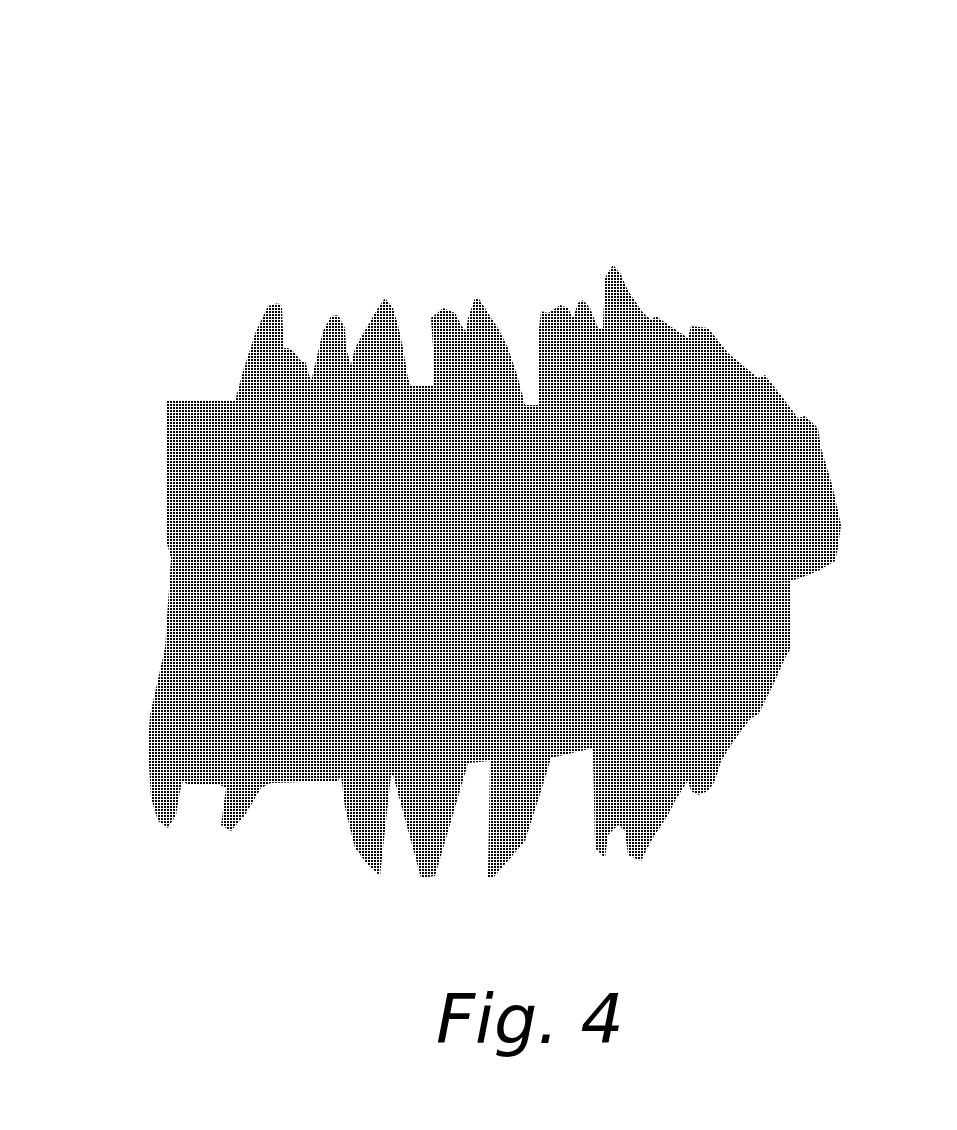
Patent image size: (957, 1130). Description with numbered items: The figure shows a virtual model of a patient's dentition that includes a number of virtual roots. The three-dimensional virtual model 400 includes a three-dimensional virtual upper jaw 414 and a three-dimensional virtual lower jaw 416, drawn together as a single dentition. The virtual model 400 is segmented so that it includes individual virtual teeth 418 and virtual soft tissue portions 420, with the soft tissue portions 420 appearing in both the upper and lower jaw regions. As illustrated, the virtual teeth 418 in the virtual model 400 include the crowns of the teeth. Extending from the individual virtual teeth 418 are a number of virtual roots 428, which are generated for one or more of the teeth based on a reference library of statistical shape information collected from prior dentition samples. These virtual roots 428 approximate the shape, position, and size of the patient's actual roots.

The 3D virtual model 400 is at (441, 447).
The 3D virtual upper jaw 414 is at (441, 418).
The 3D virtual lower jaw 416 is at (422, 709).
The 3D virtual teeth 418 is at (438, 540).
The 3D virtual soft tissue portions 420 is at (545, 456).
The 3D virtual roots 428 is at (615, 290).